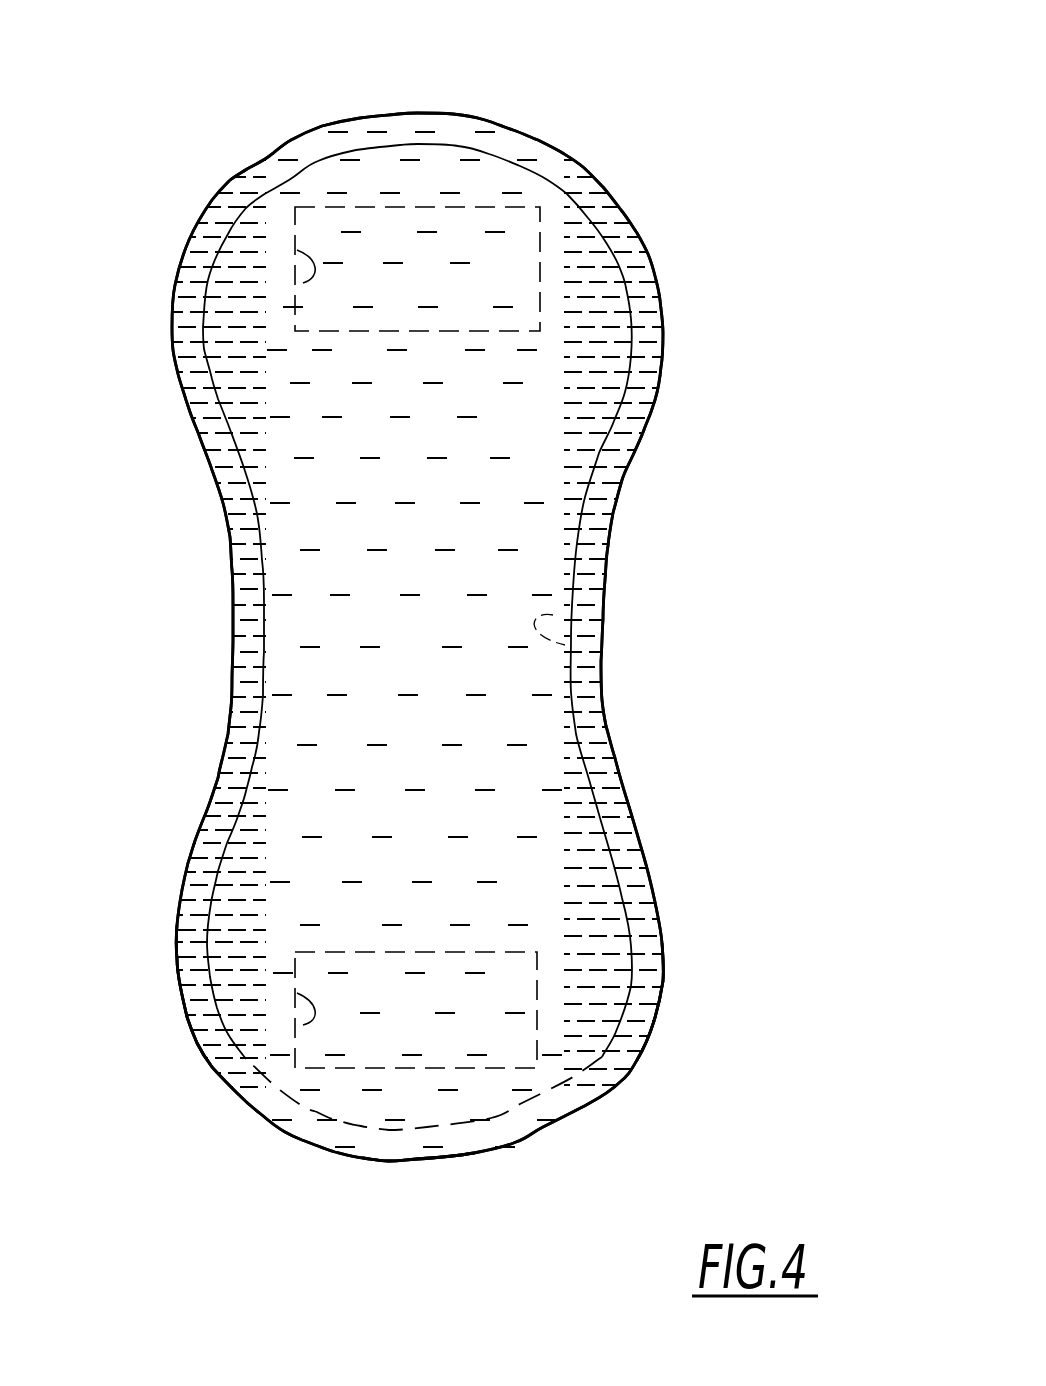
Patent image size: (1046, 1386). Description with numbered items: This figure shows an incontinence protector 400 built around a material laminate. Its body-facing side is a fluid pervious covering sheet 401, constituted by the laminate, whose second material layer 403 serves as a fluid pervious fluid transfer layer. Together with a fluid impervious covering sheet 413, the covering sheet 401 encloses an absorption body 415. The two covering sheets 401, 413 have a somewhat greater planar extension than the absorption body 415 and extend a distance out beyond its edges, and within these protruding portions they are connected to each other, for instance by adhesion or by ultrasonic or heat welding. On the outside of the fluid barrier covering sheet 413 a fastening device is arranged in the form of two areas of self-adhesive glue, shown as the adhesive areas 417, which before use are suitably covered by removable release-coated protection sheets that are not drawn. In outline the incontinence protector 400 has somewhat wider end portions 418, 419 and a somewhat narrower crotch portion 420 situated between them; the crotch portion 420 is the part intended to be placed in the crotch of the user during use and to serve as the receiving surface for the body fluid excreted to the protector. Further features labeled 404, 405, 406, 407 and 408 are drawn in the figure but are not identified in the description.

The incontinence protector 400 is at (647, 98).
The covering sheet 401 is at (555, 327).
The second material layer 403 is at (523, 432).
The rear end edge 404 is at (403, 1097).
The first longitudinal side edge 405 is at (230, 1050).
The second longitudinal side edge 406 is at (607, 1047).
The absorbent core region 407 is at (463, 778).
The side edge 408 is at (277, 750).
The fluid impervious covering sheet 413 is at (497, 533).
The absorption body 415 is at (553, 615).
The adhesive areas 417 is at (297, 250).
The end portion 418 is at (277, 317).
The end portion 419 is at (250, 928).
The crotch portion 420 is at (323, 585).